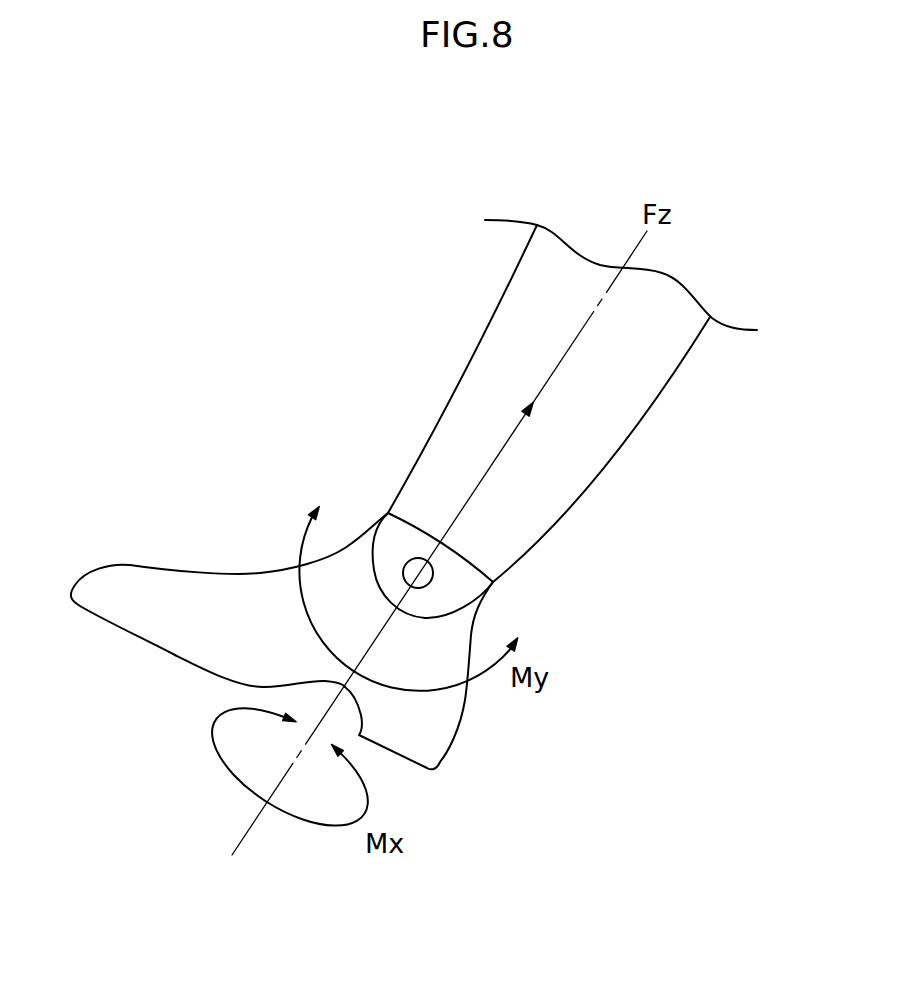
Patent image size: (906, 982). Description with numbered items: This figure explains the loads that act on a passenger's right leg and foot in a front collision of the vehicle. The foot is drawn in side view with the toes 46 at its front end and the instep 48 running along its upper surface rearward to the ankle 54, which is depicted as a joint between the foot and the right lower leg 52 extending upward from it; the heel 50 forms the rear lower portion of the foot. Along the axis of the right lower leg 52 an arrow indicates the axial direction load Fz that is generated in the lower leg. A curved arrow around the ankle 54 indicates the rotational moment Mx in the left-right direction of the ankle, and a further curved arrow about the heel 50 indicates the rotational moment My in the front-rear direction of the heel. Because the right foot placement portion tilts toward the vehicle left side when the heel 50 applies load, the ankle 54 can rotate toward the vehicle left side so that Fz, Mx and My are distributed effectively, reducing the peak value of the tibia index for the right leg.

The toes 46 is at (132, 563).
The instep 48 is at (260, 571).
The heel 50 is at (431, 769).
The right lower leg 52 is at (477, 340).
The ankle 54 is at (420, 558).